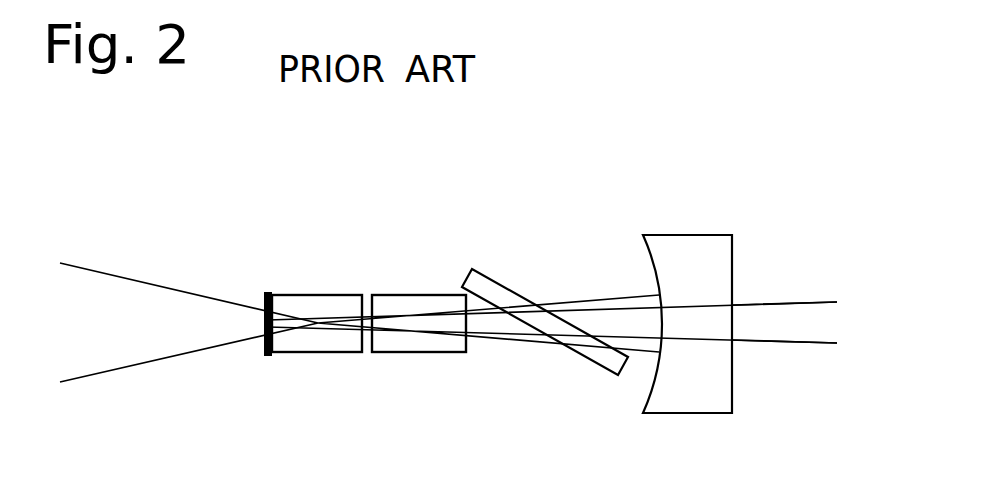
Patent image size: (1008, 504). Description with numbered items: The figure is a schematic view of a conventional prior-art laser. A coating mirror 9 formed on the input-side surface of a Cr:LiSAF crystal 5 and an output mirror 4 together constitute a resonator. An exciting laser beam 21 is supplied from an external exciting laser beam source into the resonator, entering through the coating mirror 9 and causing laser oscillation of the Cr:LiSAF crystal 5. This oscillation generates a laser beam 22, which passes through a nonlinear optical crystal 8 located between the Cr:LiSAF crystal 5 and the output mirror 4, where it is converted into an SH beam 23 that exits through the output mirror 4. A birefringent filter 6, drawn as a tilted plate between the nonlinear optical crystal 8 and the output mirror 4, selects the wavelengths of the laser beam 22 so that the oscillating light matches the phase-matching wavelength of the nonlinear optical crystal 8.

The output mirror 4 is at (708, 248).
The Cr:LiSAF crystal 5 is at (331, 299).
The birefringent filter 6 is at (482, 278).
The nonlinear optical crystal 8 is at (417, 299).
The coating mirror 9 is at (265, 298).
The exciting laser beam 21 is at (173, 356).
The laser beam 22 is at (535, 339).
The SH beam 23 is at (785, 342).